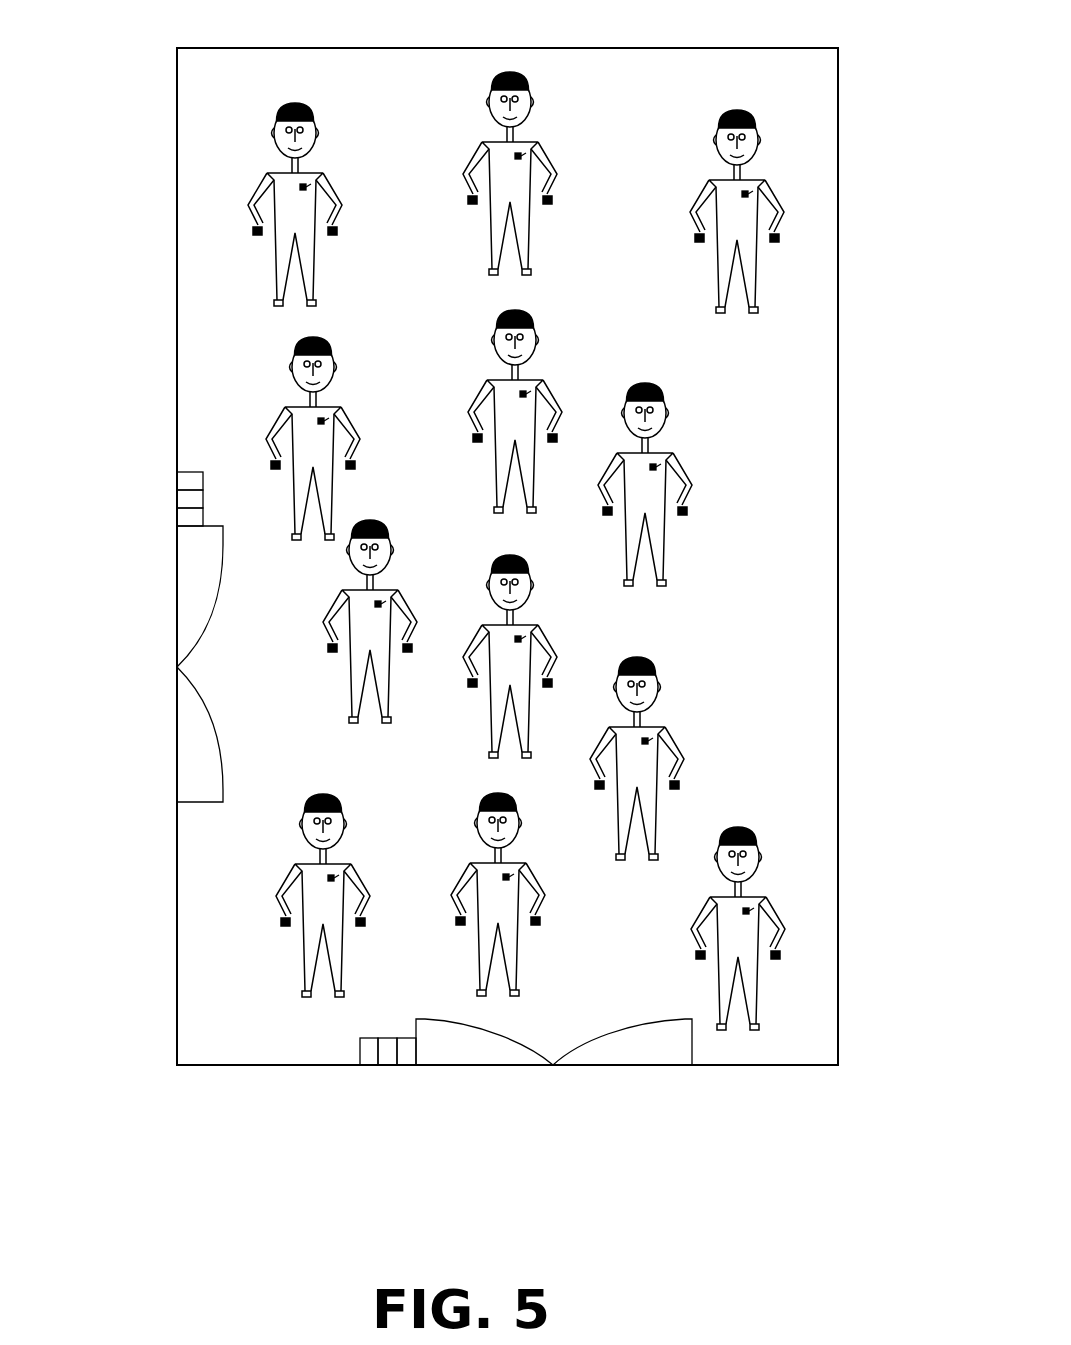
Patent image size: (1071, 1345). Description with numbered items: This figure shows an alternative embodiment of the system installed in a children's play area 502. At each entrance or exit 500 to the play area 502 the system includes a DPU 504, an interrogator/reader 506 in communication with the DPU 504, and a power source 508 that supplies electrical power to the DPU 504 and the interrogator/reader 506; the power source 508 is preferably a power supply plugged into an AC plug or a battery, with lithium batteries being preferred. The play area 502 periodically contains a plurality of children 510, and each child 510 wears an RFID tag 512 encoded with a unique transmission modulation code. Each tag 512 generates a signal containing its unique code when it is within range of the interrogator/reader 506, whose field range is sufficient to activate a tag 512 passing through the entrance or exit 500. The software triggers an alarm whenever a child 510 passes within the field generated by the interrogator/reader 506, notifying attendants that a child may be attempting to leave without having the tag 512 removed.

The entrance or exit 500 is at (150, 646).
The children's play area 502 is at (150, 137).
The DPU 504 is at (183, 517).
The interrogator/reader 506 is at (183, 499).
The power source 508 is at (183, 481).
The child 510 is at (283, 188).
The RFID tag 512 is at (309, 185).